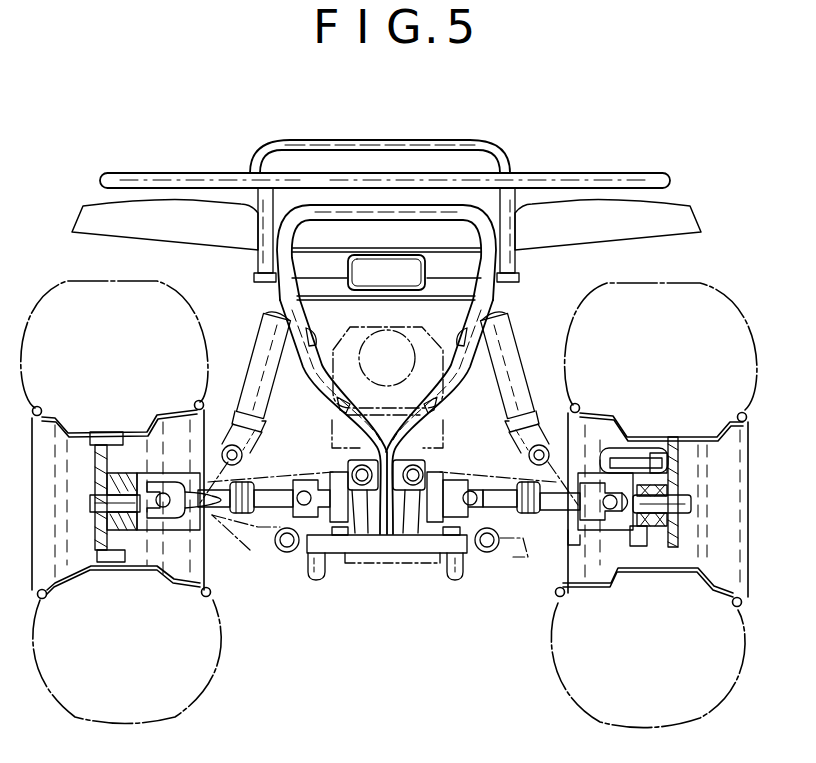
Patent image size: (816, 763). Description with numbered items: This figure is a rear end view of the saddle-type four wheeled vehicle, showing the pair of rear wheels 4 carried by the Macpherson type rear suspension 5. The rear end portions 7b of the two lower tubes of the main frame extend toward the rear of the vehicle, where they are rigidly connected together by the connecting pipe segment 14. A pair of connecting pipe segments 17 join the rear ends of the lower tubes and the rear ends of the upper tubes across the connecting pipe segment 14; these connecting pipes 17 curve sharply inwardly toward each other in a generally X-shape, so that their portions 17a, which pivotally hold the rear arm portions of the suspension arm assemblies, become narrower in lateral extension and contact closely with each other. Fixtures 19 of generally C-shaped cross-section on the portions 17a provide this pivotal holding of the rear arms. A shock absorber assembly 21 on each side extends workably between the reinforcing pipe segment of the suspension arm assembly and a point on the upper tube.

The rear wheel 4 is at (686, 493).
The rear suspension 5 is at (560, 516).
The rear end portion of lower tube 7b is at (313, 572).
The connecting pipe segment 14 is at (433, 544).
The connecting pipe segment 17 is at (326, 412).
The rear arm holding portion 17a is at (400, 518).
The fixture 19 is at (440, 455).
The shock absorber assembly 21 is at (527, 362).